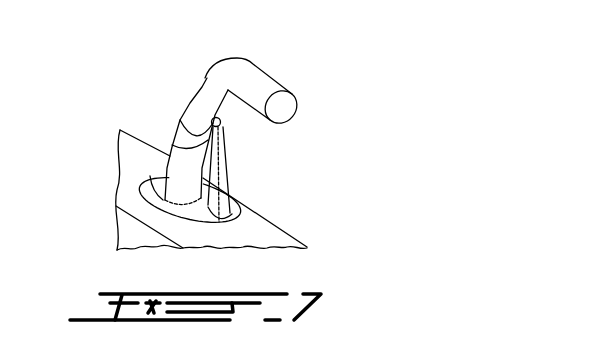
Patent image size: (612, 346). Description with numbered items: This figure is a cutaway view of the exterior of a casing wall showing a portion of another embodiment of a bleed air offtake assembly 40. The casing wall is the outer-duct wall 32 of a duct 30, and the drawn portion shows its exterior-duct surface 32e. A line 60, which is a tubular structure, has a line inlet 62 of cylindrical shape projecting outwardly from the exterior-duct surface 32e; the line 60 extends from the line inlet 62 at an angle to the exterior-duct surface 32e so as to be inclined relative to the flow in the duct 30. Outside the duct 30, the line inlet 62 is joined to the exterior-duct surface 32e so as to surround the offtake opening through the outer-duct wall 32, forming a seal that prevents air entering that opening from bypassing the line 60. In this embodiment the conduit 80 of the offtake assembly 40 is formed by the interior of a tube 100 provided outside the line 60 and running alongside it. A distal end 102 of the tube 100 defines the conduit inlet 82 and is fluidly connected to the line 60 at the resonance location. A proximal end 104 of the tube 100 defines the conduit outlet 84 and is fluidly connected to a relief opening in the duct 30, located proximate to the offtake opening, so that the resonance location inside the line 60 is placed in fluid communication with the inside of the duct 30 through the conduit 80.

The duct 30 is at (80, 214).
The outer-duct wall 32 is at (266, 194).
The exterior-duct surface 32e is at (247, 236).
The line inlet 62 is at (150, 182).
The offtake assembly 40 is at (94, 85).
The line 60 is at (222, 74).
The tube 100 is at (311, 171).
The conduit 80 is at (228, 160).
The distal end 102 is at (306, 134).
The conduit inlet 82 is at (226, 121).
The proximal end 104 is at (311, 210).
The conduit outlet 84 is at (236, 213).